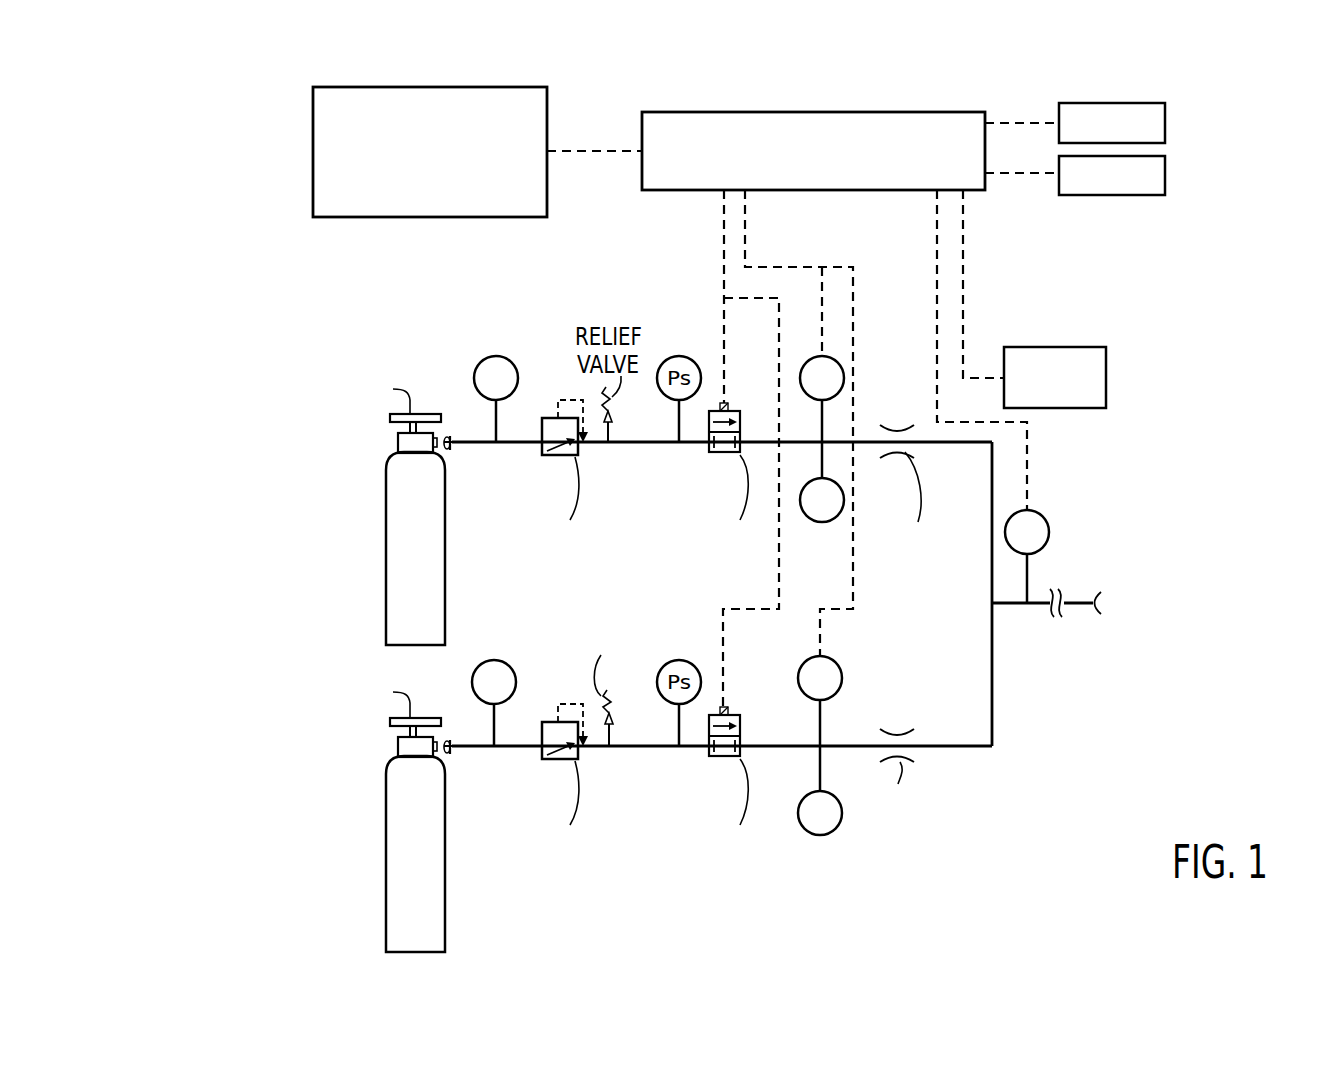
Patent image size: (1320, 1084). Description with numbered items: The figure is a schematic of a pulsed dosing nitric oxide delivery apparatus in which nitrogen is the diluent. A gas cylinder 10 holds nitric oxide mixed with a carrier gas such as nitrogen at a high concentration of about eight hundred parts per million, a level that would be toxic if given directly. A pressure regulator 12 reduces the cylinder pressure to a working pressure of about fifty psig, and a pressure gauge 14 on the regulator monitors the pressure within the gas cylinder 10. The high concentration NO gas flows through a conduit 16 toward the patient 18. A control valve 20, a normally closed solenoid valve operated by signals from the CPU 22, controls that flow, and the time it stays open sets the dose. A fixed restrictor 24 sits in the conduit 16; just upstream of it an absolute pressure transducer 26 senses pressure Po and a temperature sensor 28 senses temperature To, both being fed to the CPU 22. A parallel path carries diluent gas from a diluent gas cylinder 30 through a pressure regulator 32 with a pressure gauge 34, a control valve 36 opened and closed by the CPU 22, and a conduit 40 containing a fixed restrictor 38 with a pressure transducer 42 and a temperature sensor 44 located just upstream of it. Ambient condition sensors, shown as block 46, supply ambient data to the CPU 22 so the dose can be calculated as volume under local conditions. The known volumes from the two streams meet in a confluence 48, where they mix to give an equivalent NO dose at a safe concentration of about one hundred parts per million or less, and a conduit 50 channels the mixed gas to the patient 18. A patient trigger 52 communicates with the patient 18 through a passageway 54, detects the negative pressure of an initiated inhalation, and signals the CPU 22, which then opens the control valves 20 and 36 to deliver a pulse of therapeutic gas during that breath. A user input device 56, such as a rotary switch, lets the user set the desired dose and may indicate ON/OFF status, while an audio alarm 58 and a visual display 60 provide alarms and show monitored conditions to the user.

The gas cylinder 10 is at (386, 562).
The pressure regulator 12 is at (558, 457).
The pressure gauge 14 is at (496, 356).
The conduit 16 is at (641, 444).
The patient 18 is at (1096, 605).
The control valve 20 is at (718, 455).
The CPU 22 is at (892, 188).
The fixed restrictor 24 is at (897, 452).
The absolute pressure transducer 26 is at (812, 360).
The temperature sensor 28 is at (822, 522).
The diluent gas cylinder 30 is at (386, 865).
The pressure regulator 32 is at (558, 761).
The pressure gauge 34 is at (508, 662).
The control valve 36 is at (718, 760).
The fixed restrictor 38 is at (897, 734).
The conduit 40 is at (643, 746).
The pressure transducer 42 is at (842, 679).
The temperature sensor 44 is at (820, 835).
The ambient sensors block 46 is at (1053, 408).
The confluence 48 is at (992, 604).
The conduit 50 is at (1005, 604).
The patient trigger 52 is at (1044, 518).
The passageway 54 is at (1030, 578).
The user input device 56 is at (486, 218).
The audio alarm 58 is at (1166, 123).
The visual display 60 is at (1166, 176).